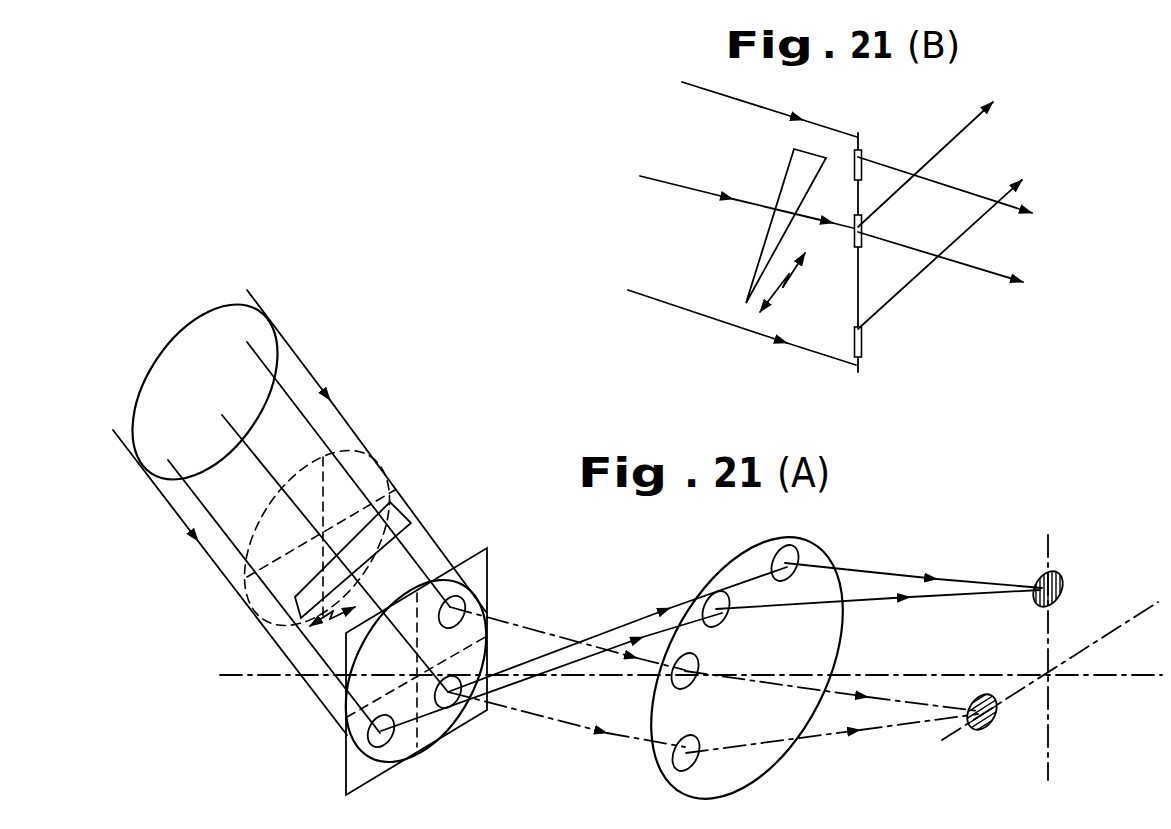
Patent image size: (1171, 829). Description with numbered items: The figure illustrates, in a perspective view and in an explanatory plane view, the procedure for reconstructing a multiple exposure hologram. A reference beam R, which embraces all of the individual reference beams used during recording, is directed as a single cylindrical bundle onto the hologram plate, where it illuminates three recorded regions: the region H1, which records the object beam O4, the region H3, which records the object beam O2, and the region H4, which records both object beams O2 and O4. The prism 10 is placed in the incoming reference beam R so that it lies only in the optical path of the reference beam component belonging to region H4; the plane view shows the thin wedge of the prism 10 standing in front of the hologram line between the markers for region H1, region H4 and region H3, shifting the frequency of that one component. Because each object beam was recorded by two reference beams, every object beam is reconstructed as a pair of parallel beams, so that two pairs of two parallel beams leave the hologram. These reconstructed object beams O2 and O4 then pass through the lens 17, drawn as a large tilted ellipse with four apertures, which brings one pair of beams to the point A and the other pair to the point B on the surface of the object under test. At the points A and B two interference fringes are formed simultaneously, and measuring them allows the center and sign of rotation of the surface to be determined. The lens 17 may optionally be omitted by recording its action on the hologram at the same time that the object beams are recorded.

In FIG. 21B, the prism 10 is at (788, 178).
In FIG. 21A, the prism 10 is at (403, 530).
In FIG. 21A, the lens 17 is at (783, 760).
In FIG. 21B, the reference beam R is at (734, 223).
In FIG. 21A, the reference beam R is at (294, 506).
In FIG. 21B, the region H1 is at (944, 173).
In FIG. 21A, the region H1 is at (479, 591).
In FIG. 21B, the region H3 is at (939, 275).
In FIG. 21A, the region H3 is at (354, 758).
In FIG. 21B, the region H4 is at (939, 192).
In FIG. 21A, the region H4 is at (469, 710).
In FIG. 21A, the object beam O2 is at (627, 641).
In FIG. 21A, the object beam O4 is at (623, 652).
In FIG. 21A, the point A is at (902, 590).
In FIG. 21A, the point B is at (851, 707).